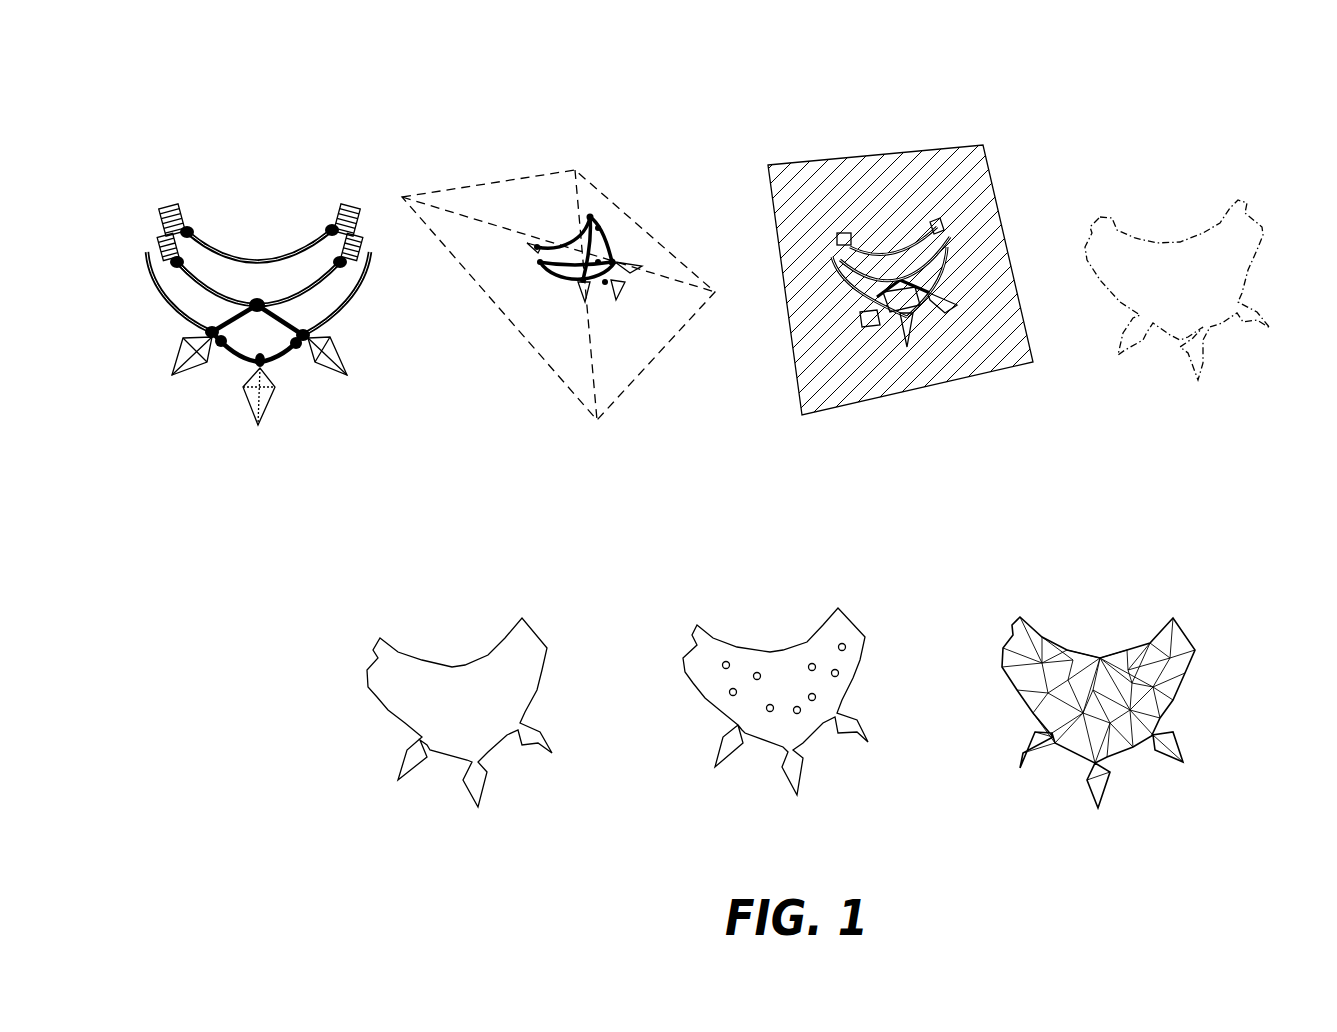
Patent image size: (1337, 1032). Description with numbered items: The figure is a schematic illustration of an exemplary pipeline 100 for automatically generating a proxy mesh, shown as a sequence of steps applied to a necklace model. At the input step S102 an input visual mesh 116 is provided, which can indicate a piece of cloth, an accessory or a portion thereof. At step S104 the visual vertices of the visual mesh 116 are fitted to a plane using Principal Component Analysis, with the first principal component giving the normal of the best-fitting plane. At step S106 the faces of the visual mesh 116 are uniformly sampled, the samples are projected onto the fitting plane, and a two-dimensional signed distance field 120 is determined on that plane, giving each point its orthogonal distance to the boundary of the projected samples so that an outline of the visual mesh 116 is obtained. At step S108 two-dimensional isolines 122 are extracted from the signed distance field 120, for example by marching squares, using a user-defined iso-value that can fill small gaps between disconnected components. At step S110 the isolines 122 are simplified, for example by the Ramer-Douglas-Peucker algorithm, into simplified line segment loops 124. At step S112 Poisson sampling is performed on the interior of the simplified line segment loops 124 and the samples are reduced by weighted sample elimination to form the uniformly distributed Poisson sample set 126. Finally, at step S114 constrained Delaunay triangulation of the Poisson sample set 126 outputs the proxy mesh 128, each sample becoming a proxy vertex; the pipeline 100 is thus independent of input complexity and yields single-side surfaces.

The pipeline 100 is at (292, 78).
The input step S102 is at (249, 203).
The plane fitting step S104 is at (491, 160).
The signed distance field step S106 is at (837, 147).
The isoline extraction step S108 is at (1169, 200).
The simplification step S110 is at (441, 633).
The Poisson sampling step S112 is at (776, 633).
The triangulation step S114 is at (1101, 628).
The input visual mesh 116 is at (340, 302).
The signed distance field 120 is at (922, 327).
The isolines 122 is at (1213, 327).
The simplified line segment loops 124 is at (492, 752).
The Poisson sample set 126 is at (800, 714).
The proxy mesh 128 is at (1138, 747).